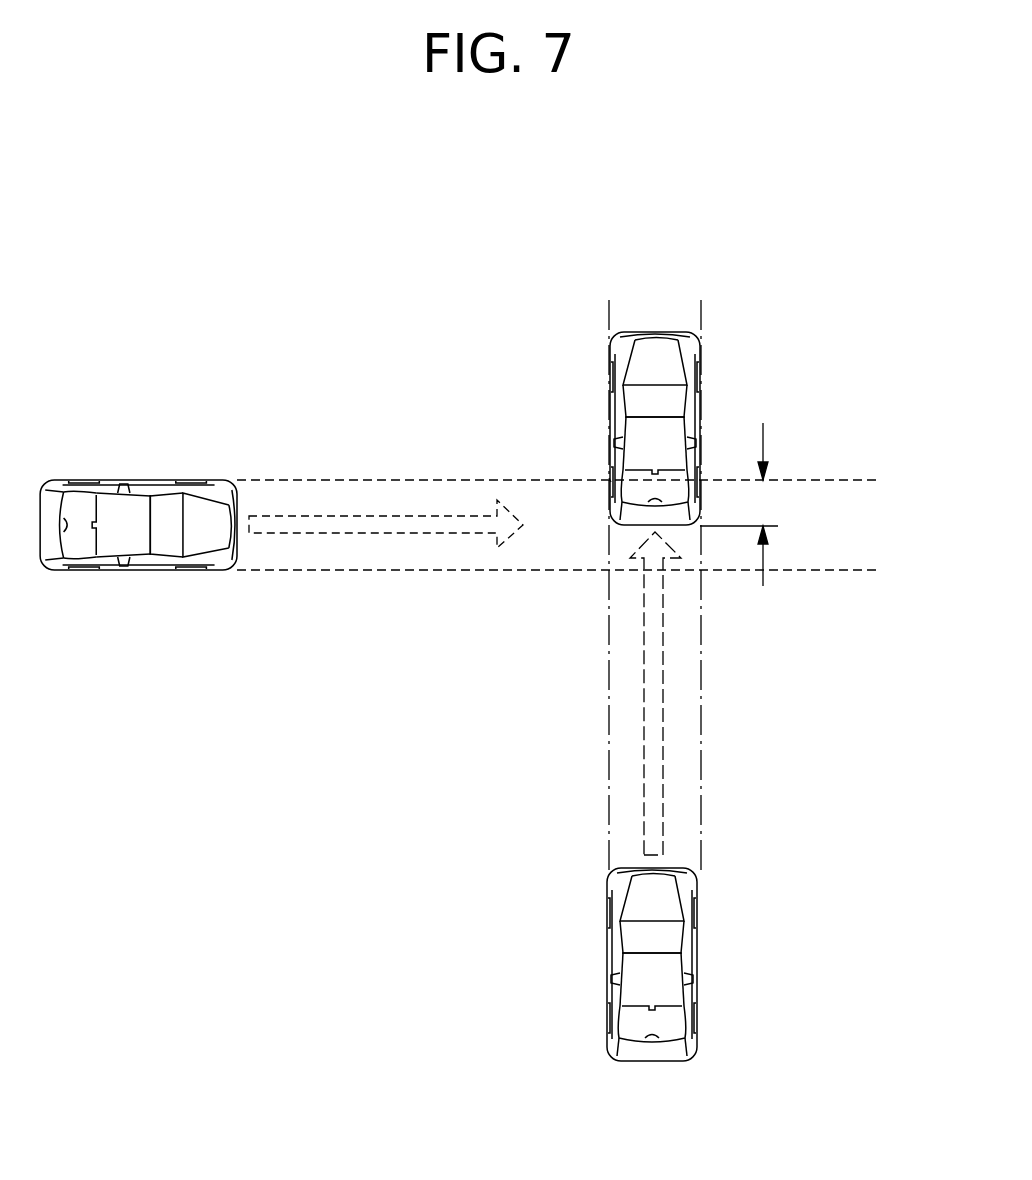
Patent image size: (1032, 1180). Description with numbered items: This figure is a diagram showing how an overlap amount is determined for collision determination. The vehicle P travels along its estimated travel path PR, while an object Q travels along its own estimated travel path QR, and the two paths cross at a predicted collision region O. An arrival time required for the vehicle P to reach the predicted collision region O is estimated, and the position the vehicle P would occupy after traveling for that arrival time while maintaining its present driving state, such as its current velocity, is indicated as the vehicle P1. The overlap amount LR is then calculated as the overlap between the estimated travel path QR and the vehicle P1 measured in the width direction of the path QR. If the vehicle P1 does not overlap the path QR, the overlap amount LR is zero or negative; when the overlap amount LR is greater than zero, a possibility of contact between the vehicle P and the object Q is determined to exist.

The estimated travel path of the vehicle PR is at (608, 318).
The vehicle at arrival time P1 is at (608, 371).
The predicted collision region O is at (609, 480).
The overlap amount LR is at (756, 504).
The estimated travel path of the object QR is at (813, 572).
The object Q is at (135, 545).
The vehicle P is at (675, 965).